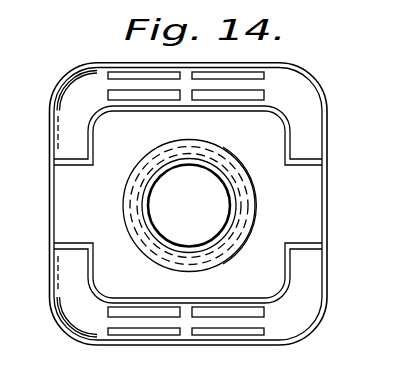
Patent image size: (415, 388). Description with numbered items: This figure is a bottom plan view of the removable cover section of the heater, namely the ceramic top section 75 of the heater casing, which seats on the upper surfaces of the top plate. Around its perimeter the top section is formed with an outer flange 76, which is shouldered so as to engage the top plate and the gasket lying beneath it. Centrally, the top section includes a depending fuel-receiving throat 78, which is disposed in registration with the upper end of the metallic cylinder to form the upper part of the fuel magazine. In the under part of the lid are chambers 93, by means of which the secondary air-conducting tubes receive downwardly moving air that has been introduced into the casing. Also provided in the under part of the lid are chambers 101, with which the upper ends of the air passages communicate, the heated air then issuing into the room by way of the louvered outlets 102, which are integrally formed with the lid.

The chambers 93 is at (295, 198).
The chambers 101 is at (303, 121).
The top section 75 is at (268, 278).
The outer flange 76 is at (62, 313).
The fuel-receiving throat 78 is at (145, 198).
The louvered outlets 102 is at (207, 337).